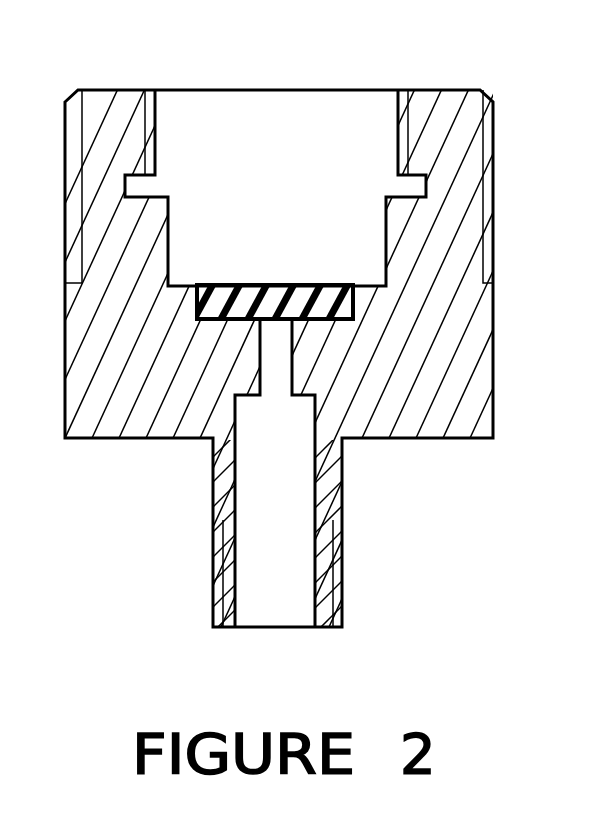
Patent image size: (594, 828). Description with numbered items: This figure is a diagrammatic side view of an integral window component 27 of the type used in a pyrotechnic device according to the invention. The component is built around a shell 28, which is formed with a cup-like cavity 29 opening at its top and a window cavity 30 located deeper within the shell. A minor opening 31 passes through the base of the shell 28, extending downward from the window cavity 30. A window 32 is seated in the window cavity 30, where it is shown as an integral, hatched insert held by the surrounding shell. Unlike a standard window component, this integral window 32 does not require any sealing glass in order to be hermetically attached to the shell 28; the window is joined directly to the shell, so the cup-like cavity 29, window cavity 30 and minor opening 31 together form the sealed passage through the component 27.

The integral window component 27 is at (508, 318).
The shell 28 is at (495, 188).
The cup-like cavity 29 is at (158, 112).
The window cavity 30 is at (353, 305).
The minor opening 31 is at (277, 412).
The window 32 is at (318, 290).